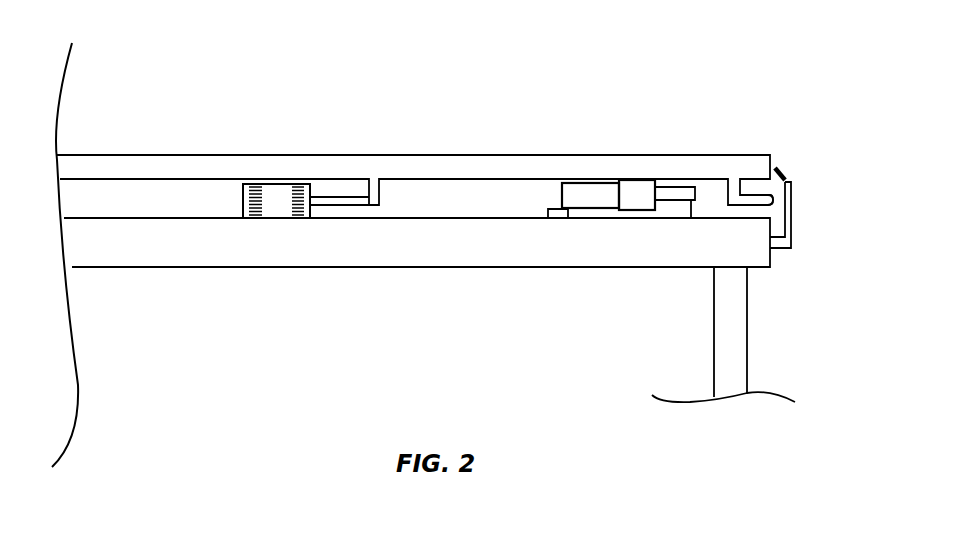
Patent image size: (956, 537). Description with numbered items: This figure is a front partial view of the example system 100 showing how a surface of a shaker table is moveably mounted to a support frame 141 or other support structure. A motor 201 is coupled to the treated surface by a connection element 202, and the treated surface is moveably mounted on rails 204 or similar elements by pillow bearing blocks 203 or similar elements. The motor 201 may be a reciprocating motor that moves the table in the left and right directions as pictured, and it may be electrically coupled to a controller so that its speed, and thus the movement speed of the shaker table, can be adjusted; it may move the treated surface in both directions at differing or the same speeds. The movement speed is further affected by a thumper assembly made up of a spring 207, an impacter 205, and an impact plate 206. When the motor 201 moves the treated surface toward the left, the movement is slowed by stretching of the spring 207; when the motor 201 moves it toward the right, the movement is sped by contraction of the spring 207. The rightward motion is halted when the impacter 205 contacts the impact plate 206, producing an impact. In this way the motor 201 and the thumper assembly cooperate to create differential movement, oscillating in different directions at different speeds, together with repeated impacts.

The system 100 is at (197, 75).
The support frame 141 is at (747, 320).
The motor 201 is at (273, 179).
The connection element 202 is at (347, 196).
The pillow bearing blocks 203 is at (556, 208).
The rails 204 is at (600, 198).
The impacter 205 is at (757, 207).
The impact plate 206 is at (795, 242).
The spring 207 is at (780, 168).